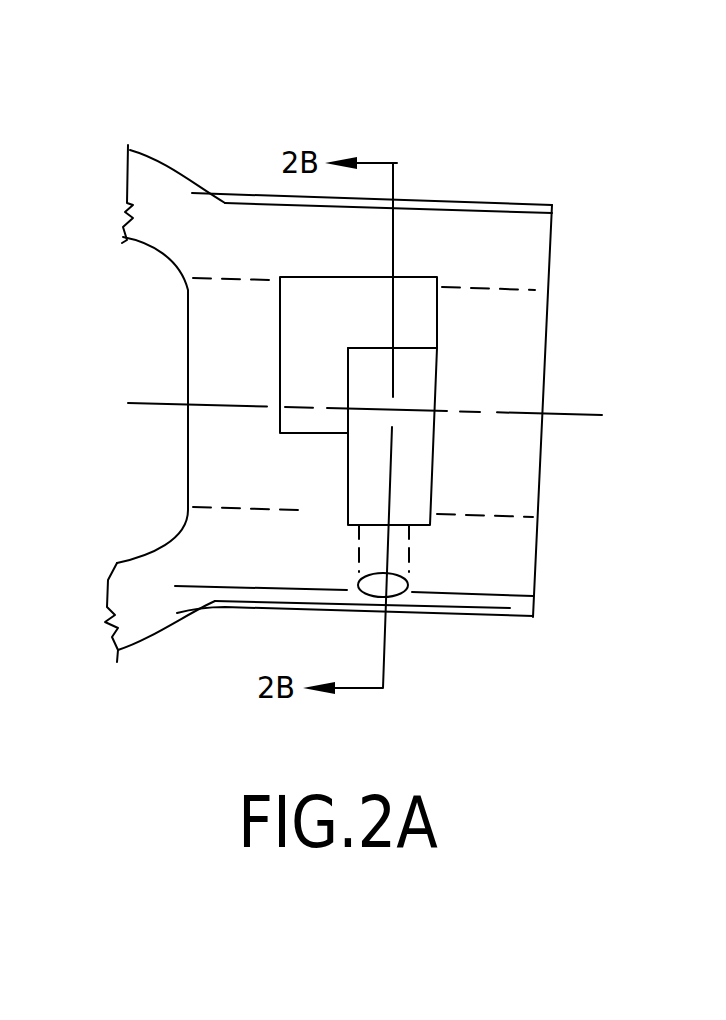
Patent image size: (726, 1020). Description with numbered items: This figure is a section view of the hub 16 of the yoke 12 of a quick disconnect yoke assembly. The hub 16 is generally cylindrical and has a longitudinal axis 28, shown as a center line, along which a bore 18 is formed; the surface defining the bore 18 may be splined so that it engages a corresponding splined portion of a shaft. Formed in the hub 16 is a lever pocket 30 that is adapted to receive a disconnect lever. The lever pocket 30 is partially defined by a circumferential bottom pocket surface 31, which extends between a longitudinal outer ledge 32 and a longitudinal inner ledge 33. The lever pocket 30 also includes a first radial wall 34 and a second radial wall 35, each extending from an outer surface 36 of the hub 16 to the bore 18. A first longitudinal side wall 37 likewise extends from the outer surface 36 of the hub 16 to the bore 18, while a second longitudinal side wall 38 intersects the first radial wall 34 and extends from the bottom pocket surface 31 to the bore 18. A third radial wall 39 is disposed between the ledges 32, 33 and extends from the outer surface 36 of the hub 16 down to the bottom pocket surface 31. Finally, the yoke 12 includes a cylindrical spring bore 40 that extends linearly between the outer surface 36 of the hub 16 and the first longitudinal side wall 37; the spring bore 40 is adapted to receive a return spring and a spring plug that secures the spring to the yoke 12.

The yoke 12 is at (234, 160).
The hub 16 is at (455, 223).
The bore 18 is at (508, 498).
The longitudinal axis 28 is at (565, 415).
The lever pocket 30 is at (512, 313).
The bottom pocket surface 31 is at (308, 332).
The longitudinal outer ledge 32 is at (298, 276).
The longitudinal inner ledge 33 is at (297, 437).
The first radial wall 34 is at (432, 475).
The second radial wall 35 is at (346, 498).
The outer surface 36 is at (520, 245).
The first longitudinal side wall 37 is at (420, 527).
The second longitudinal side wall 38 is at (413, 350).
The third radial wall 39 is at (278, 360).
The cylindrical spring bore 40 is at (395, 585).